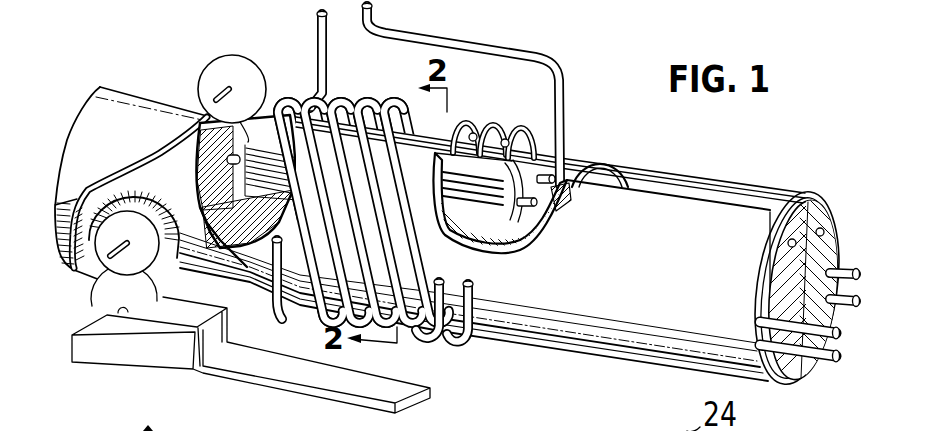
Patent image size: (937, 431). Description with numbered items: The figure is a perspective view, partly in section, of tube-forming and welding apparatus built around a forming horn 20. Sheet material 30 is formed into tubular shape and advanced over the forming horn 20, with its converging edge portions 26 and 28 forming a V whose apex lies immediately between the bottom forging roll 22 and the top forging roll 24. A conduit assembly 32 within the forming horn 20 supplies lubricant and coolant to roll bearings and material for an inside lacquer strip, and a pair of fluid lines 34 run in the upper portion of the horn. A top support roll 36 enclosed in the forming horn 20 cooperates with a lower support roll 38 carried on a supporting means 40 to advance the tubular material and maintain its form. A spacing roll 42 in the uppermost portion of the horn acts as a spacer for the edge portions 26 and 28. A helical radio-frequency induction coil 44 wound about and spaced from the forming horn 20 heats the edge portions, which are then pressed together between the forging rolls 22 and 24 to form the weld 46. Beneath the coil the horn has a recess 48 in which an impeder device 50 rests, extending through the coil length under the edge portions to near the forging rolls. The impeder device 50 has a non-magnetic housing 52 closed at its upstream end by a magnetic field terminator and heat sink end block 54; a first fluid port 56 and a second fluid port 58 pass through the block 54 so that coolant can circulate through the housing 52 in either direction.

The forming horn 20 is at (830, 245).
The bottom forging roll 22 is at (248, 140).
The top forging roll 24 is at (233, 55).
The edge portion 26 is at (737, 184).
The edge portion 28 is at (684, 178).
The sheet material 30 is at (667, 308).
The fluid entry and/or exit conduit assembly 32 is at (866, 304).
The fluid lines 34 is at (822, 230).
The top support roll 36 is at (106, 262).
The lower support roll 38 is at (97, 305).
The supporting means 40 is at (248, 390).
The spacing roll 42 is at (595, 153).
The radio-frequency induction coil 44 is at (375, 84).
The weld 46 is at (147, 104).
The recess 48 is at (528, 232).
The impeder device 50 is at (477, 214).
The non-magnetic housing 52 is at (480, 158).
The magnetic field intensity terminator and heat sink end block 54 is at (537, 163).
The first fluid port 56 is at (565, 165).
The second fluid port 58 is at (560, 207).